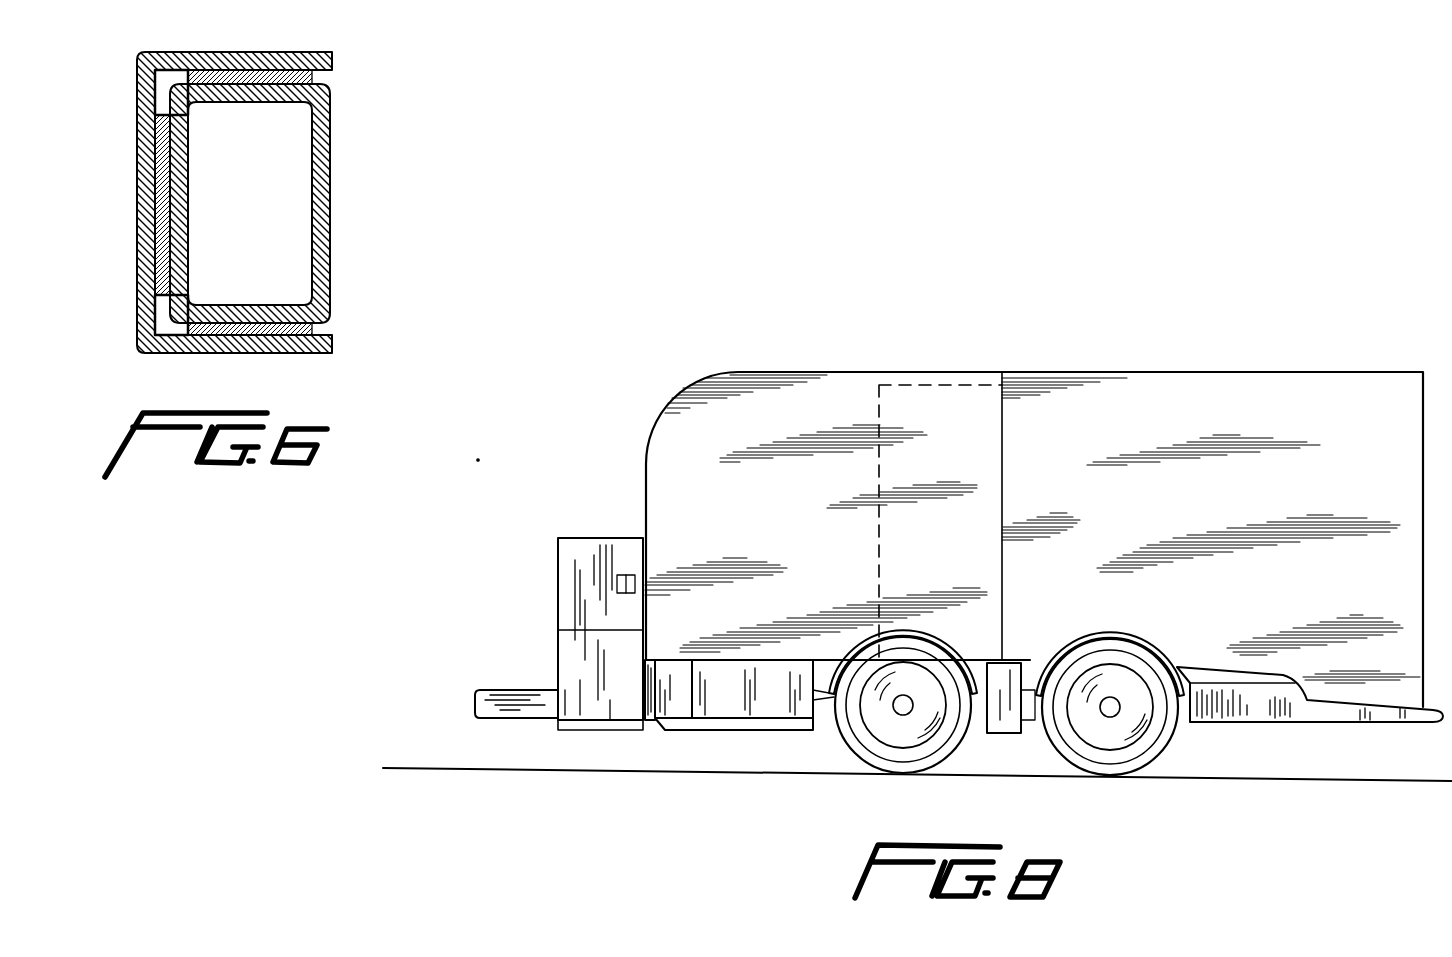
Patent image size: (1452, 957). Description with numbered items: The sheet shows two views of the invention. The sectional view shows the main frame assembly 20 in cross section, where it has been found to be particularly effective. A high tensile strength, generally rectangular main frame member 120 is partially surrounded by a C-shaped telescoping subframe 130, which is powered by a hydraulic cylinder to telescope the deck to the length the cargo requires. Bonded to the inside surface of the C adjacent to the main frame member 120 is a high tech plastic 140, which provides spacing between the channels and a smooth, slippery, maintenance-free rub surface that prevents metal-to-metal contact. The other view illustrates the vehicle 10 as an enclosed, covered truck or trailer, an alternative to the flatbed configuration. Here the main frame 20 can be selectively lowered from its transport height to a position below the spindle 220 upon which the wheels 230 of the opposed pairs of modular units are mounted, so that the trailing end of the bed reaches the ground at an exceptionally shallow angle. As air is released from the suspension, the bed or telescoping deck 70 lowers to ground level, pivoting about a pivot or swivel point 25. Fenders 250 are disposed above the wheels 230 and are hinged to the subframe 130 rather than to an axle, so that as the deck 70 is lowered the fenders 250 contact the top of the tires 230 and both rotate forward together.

In FIG. 6, the C-shaped telescoping subframe 130 is at (332, 62).
In FIG. 6, the high tech plastic 140 is at (320, 82).
In FIG. 6, the main frame member 120 is at (328, 290).
In FIG. 8, the vehicle 10 is at (460, 554).
In FIG. 8, the main frame assembly 20 is at (508, 690).
In FIG. 8, the pivot or swivel point 25 is at (474, 705).
In FIG. 8, the spindle 220 is at (910, 707).
In FIG. 8, the wheels 230 is at (867, 743).
In FIG. 8, the fenders 250 is at (917, 632).
In FIG. 8, the telescoping deck 70 is at (1410, 722).